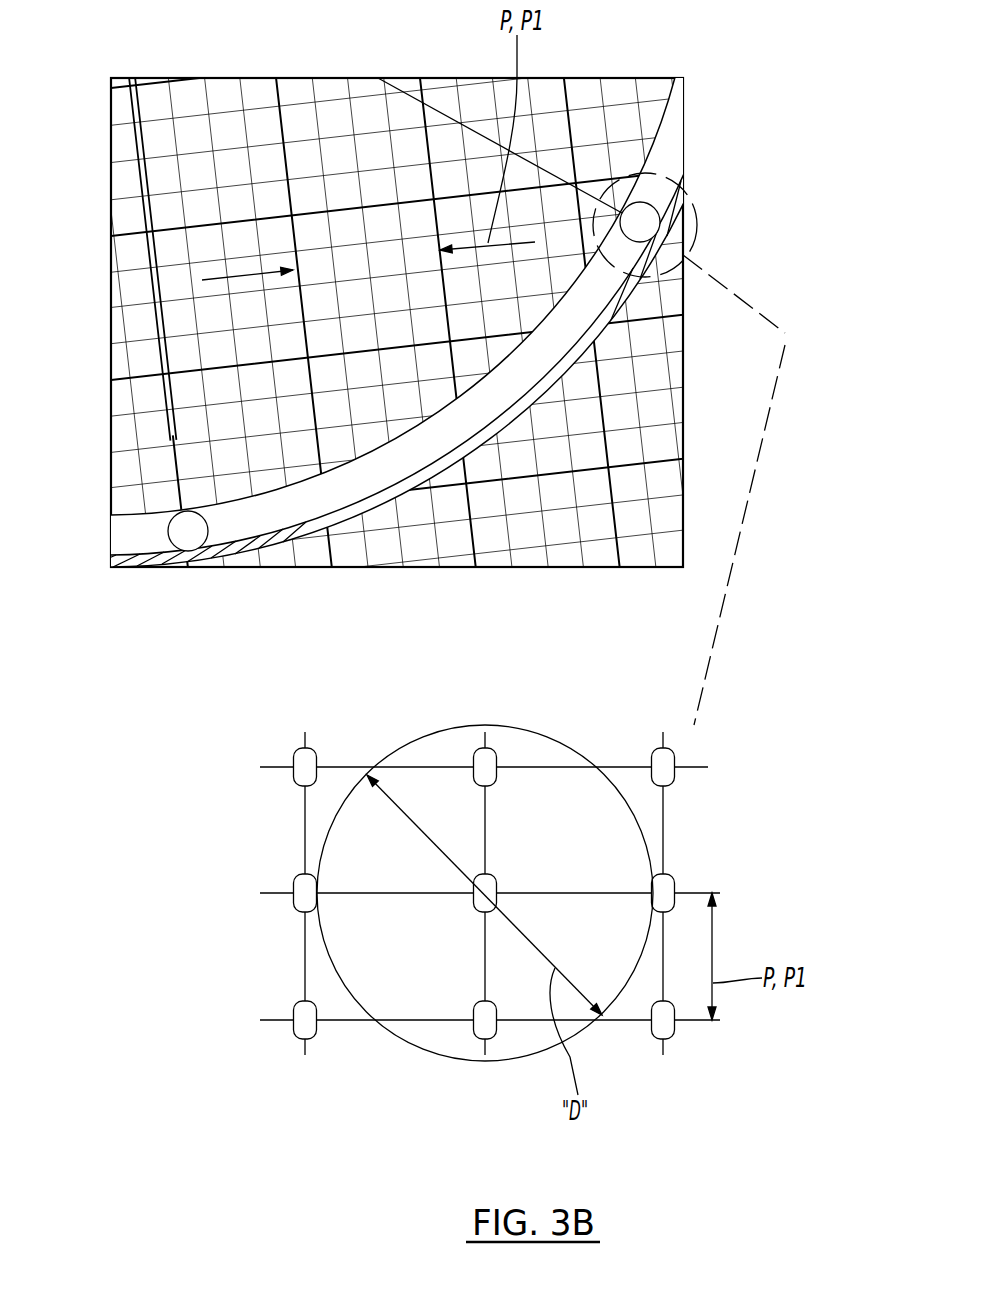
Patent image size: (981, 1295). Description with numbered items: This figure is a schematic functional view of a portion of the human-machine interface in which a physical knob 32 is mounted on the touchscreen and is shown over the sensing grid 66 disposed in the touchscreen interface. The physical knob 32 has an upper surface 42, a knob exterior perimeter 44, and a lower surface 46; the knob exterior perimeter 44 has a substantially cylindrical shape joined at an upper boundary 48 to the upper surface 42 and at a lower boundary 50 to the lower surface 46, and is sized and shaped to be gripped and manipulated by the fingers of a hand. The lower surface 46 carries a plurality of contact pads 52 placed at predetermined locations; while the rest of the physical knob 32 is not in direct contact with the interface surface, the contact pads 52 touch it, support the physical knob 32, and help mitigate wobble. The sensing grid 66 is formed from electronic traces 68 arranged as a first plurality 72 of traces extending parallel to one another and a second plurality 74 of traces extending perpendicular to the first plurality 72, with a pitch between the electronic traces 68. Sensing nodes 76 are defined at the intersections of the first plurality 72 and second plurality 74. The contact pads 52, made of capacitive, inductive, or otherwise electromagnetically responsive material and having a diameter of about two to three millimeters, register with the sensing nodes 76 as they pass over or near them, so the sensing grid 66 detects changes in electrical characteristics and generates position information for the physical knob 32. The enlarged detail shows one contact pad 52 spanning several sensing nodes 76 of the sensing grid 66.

The physical knob 32 is at (720, 68).
The upper surface 42 is at (373, 478).
The knob exterior perimeter 44 is at (215, 550).
The lower surface 46 is at (380, 505).
The upper boundary 48 is at (565, 433).
The lower boundary 50 is at (565, 433).
The contact pad 52 is at (643, 227).
The sensing grid 66 is at (488, 570).
The electronic traces 68 is at (635, 567).
The first plurality of electronic traces 72 is at (170, 230).
The second plurality of electronic traces 74 is at (282, 128).
The sensing nodes 76 is at (433, 197).